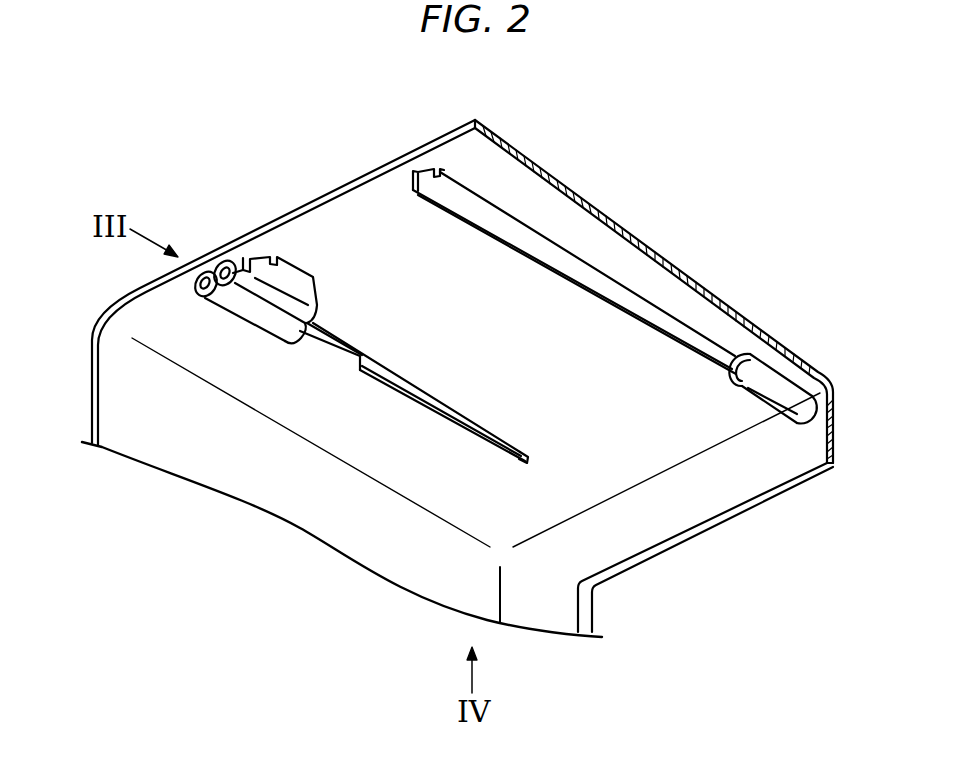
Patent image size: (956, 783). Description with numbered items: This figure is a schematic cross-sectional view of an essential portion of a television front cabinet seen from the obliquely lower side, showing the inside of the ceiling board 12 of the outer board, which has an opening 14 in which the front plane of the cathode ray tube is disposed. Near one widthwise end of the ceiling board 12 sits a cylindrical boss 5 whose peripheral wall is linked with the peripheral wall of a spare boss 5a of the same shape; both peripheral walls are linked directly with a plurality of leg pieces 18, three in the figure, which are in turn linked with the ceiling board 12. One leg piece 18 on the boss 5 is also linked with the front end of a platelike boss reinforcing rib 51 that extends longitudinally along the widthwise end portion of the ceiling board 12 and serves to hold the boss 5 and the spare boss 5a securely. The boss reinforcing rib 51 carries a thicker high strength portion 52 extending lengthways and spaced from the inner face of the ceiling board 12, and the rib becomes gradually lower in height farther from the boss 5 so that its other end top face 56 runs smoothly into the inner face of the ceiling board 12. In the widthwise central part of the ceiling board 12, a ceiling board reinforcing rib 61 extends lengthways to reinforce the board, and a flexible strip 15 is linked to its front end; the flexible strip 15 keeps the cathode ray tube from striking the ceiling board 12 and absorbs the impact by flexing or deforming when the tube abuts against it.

The cylindrical boss 5 is at (233, 308).
The spare boss 5a is at (268, 303).
The ceiling board 12 is at (350, 179).
The opening 14 is at (747, 507).
The flexible strip 15 is at (773, 385).
The leg piece 18 is at (289, 268).
The boss reinforcing rib 51 is at (402, 380).
The high strength portion 52 is at (327, 341).
The other end top face 56 is at (520, 448).
The ceiling board reinforcing rib 61 is at (580, 270).